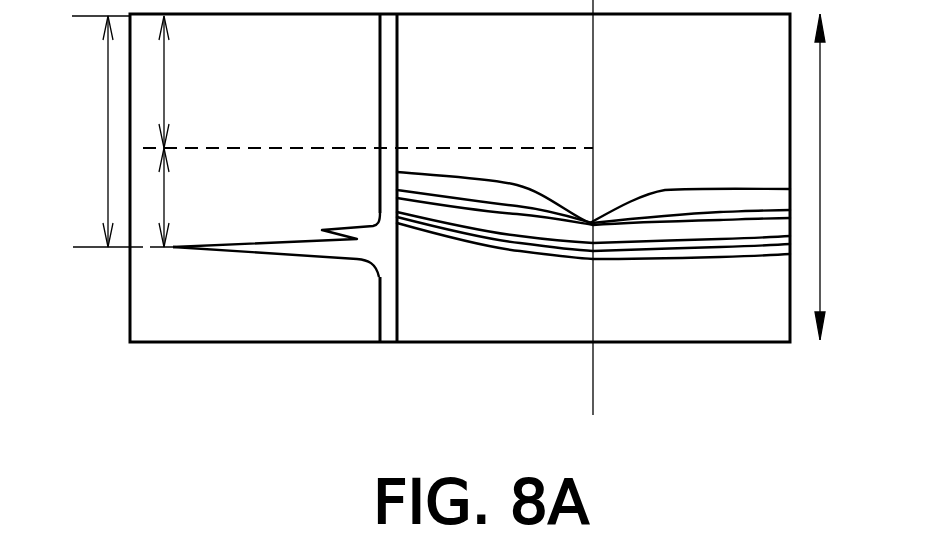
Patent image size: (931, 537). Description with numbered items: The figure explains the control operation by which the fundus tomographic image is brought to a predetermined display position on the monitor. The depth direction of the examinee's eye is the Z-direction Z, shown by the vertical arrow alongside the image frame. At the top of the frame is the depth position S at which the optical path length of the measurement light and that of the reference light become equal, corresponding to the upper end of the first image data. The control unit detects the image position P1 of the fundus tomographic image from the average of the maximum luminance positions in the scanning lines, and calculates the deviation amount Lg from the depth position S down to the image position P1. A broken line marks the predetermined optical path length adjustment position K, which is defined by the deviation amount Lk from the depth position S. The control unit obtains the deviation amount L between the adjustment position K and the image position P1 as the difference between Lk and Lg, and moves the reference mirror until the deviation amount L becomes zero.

The depth position S is at (87, 17).
The deviation amount Lg is at (82, 131).
The deviation amount Lk is at (191, 82).
The deviation amount L is at (181, 197).
The optical path length adjustment position K is at (233, 148).
The image position P1 is at (173, 250).
The Z-direction Z is at (838, 177).